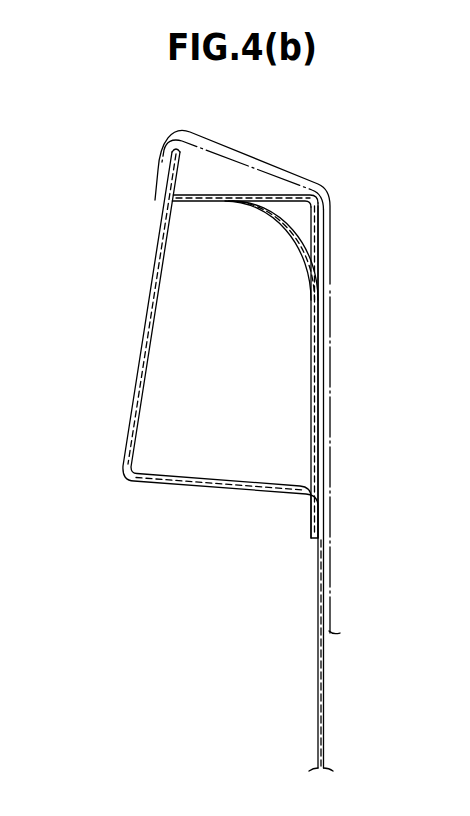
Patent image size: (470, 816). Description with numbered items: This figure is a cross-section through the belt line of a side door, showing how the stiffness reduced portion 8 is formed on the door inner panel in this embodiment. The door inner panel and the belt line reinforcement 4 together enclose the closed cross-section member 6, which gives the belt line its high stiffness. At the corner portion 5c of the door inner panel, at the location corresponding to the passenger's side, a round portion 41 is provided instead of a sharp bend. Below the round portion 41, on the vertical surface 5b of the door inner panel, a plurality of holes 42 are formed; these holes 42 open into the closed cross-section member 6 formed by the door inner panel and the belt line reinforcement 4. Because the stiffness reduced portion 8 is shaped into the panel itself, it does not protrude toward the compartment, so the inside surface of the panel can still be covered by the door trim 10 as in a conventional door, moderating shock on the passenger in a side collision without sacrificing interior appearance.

The belt line reinforcement 4 is at (137, 383).
The round portion 41 is at (298, 231).
The holes 42 is at (324, 337).
The corner portion 5c is at (333, 187).
The vertical surface 5b is at (325, 685).
The door trim 10 is at (332, 410).
The stiffness reduced portion 8 is at (381, 275).
The closed cross-section member 6 is at (228, 376).